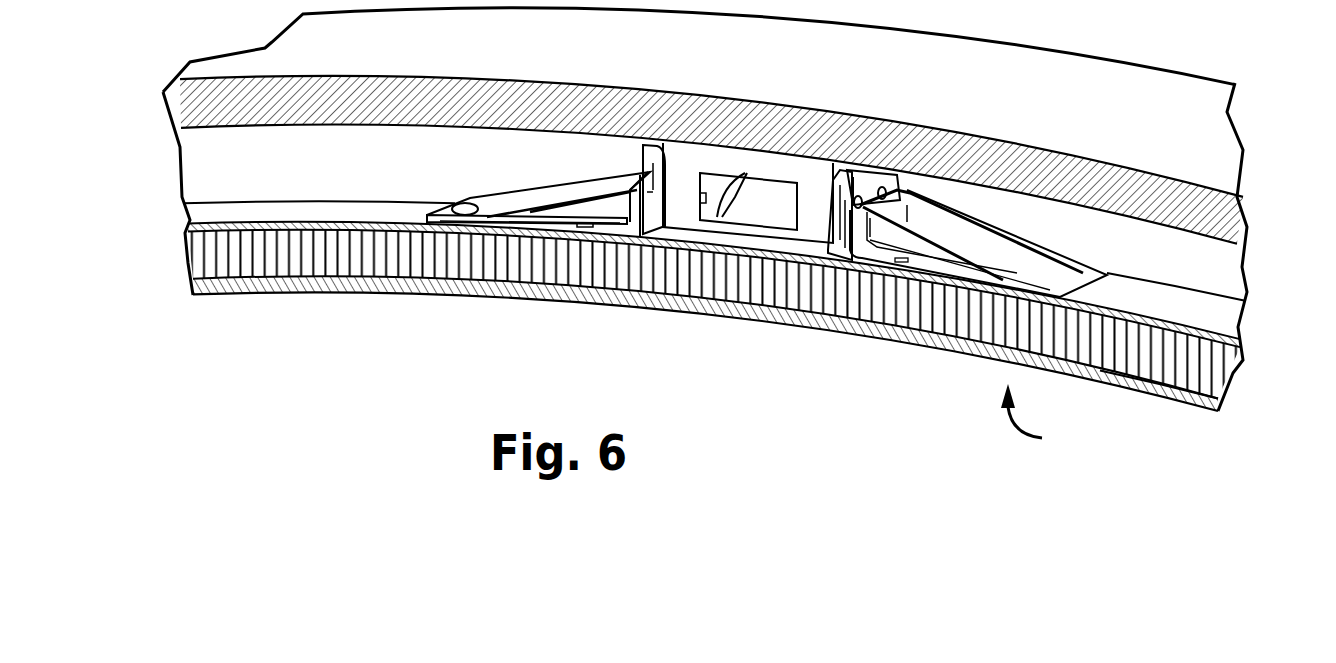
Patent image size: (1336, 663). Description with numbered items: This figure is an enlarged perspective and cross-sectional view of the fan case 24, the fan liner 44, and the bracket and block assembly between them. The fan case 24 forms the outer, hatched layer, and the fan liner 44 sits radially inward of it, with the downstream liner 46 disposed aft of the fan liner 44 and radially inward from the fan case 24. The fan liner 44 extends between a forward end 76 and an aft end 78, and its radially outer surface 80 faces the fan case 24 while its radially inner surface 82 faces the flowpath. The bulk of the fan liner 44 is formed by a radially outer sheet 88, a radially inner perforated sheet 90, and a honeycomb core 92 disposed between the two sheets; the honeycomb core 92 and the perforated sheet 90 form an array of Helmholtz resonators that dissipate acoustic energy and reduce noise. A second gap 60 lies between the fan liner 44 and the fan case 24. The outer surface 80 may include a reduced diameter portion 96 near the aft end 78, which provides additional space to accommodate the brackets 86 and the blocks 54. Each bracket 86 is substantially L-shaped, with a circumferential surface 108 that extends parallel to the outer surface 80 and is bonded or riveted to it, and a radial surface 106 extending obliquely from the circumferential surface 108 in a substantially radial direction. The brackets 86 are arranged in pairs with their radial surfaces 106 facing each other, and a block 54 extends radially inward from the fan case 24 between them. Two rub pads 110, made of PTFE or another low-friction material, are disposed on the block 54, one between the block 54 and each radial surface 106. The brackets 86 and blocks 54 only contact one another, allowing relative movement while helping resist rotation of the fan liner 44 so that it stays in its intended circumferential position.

The fan case 24 is at (1160, 187).
The fan liner 44 is at (1040, 418).
The downstream liner 46 is at (1193, 265).
The block 54 is at (756, 163).
The second gap 60 is at (230, 157).
The forward end 76 is at (1222, 327).
The aft end 78 is at (213, 293).
The radially outer surface 80 is at (217, 210).
The radially inner surface 82 is at (313, 293).
The bracket 86 is at (500, 207).
The radially outer sheet 88 is at (210, 233).
The radially inner perforated sheet 90 is at (218, 270).
The honeycomb core 92 is at (447, 258).
The reduced diameter portion 96 is at (1203, 310).
The radial surface 106 is at (652, 213).
The circumferential surface 108 is at (568, 227).
The rub pad 110 is at (658, 193).